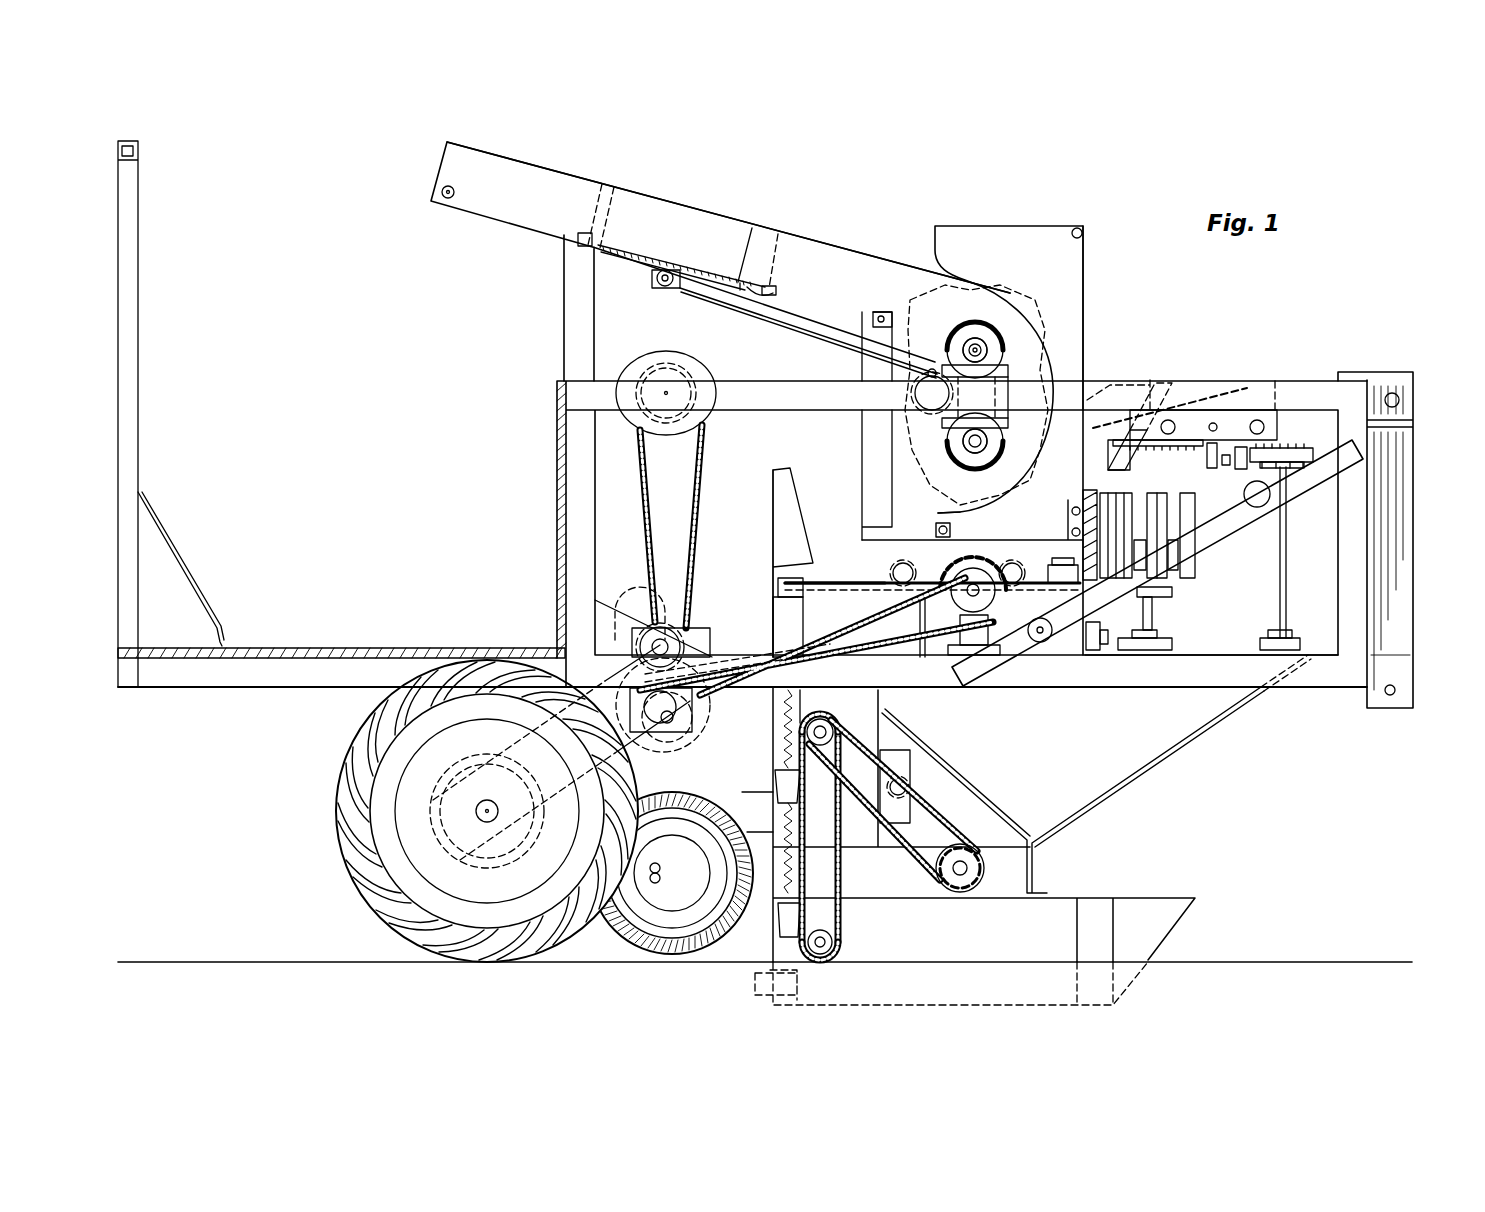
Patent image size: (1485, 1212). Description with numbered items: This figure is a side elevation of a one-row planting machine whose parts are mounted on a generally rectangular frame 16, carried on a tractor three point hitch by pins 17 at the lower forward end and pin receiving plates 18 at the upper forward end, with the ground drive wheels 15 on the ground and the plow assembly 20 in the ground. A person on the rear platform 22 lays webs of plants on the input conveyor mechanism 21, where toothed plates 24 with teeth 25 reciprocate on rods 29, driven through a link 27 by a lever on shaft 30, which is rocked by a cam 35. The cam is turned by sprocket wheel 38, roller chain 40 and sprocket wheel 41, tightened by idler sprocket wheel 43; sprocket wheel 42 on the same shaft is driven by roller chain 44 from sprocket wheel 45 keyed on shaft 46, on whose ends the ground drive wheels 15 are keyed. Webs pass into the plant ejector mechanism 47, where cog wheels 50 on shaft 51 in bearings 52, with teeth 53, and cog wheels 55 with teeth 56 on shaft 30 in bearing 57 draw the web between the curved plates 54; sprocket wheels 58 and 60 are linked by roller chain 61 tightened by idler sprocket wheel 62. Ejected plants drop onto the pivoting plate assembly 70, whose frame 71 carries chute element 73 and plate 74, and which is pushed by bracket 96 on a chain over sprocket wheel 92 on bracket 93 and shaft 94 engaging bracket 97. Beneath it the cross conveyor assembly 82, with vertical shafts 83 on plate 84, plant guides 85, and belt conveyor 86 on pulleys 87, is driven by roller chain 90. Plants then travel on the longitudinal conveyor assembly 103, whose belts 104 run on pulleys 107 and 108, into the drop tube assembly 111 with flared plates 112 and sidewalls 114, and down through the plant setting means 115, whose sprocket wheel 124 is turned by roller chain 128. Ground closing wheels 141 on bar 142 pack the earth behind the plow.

The ground drive wheels 15 is at (338, 795).
The frame 16 is at (1328, 375).
The pins 17 is at (1397, 690).
The pin receiving plates 18 is at (1402, 397).
The plow assembly 20 is at (1075, 893).
The input conveyor mechanism 21 is at (870, 242).
The platform 22 is at (284, 645).
The plates 24 is at (756, 238).
The teeth 25 is at (672, 204).
The link 27 is at (723, 298).
The rods 29 is at (763, 295).
The shaft 30 is at (966, 462).
The cam 35 is at (634, 374).
The sprocket wheel 38 is at (692, 435).
The roller chain 40 is at (648, 529).
The sprocket wheel 41 is at (689, 735).
The sprocket wheel 42 is at (667, 757).
The idler sprocket wheel 43 is at (645, 600).
The roller chain 44 is at (505, 740).
The sprocket wheel 45 is at (509, 758).
The shaft 46 is at (495, 782).
The plant ejector mechanism 47 is at (1092, 268).
The cog wheels 50 is at (912, 328).
The shaft 51 is at (972, 344).
The bearings 52 is at (980, 340).
The teeth 53 is at (882, 348).
The plates 54 is at (1013, 240).
The cog wheels 55 is at (908, 440).
The teeth 56 is at (943, 502).
The bearing 57 is at (982, 465).
The sprocket wheel 58 is at (950, 360).
The sprocket wheel 60 is at (953, 455).
The roller chain 61 is at (1002, 400).
The idler sprocket wheel 62 is at (914, 393).
The pivoting plate assembly 70 is at (1158, 392).
The frame 71 is at (1223, 457).
The chute element 73 is at (1182, 440).
The plate 74 is at (1221, 392).
The cross conveyor assembly 82 is at (1198, 592).
The vertical shafts 83 is at (1148, 614).
The plate 84 is at (1190, 653).
The plant guides 85 is at (1128, 505).
The belt conveyor 86 is at (1100, 640).
The pulleys 87 is at (1090, 662).
The roller chain 90 is at (865, 619).
The sprocket wheel 92 is at (1290, 446).
The bracket 93 is at (1280, 503).
The shaft 94 is at (1284, 544).
The bracket 96 is at (1247, 487).
The bracket 97 is at (1237, 463).
The longitudinal conveyor assembly 103 is at (838, 558).
The belts 104 is at (833, 588).
The pulleys 107 is at (780, 578).
The pulleys 108 is at (989, 575).
The drop tube assembly 111 is at (770, 540).
The flared plates 112 is at (780, 496).
The sidewalls 114 is at (780, 605).
The plant setting means 115 is at (974, 785).
The sprocket wheel 124 is at (987, 853).
The roller chain 128 is at (758, 717).
The ground closing wheels 141 is at (710, 918).
The bar 142 is at (757, 800).